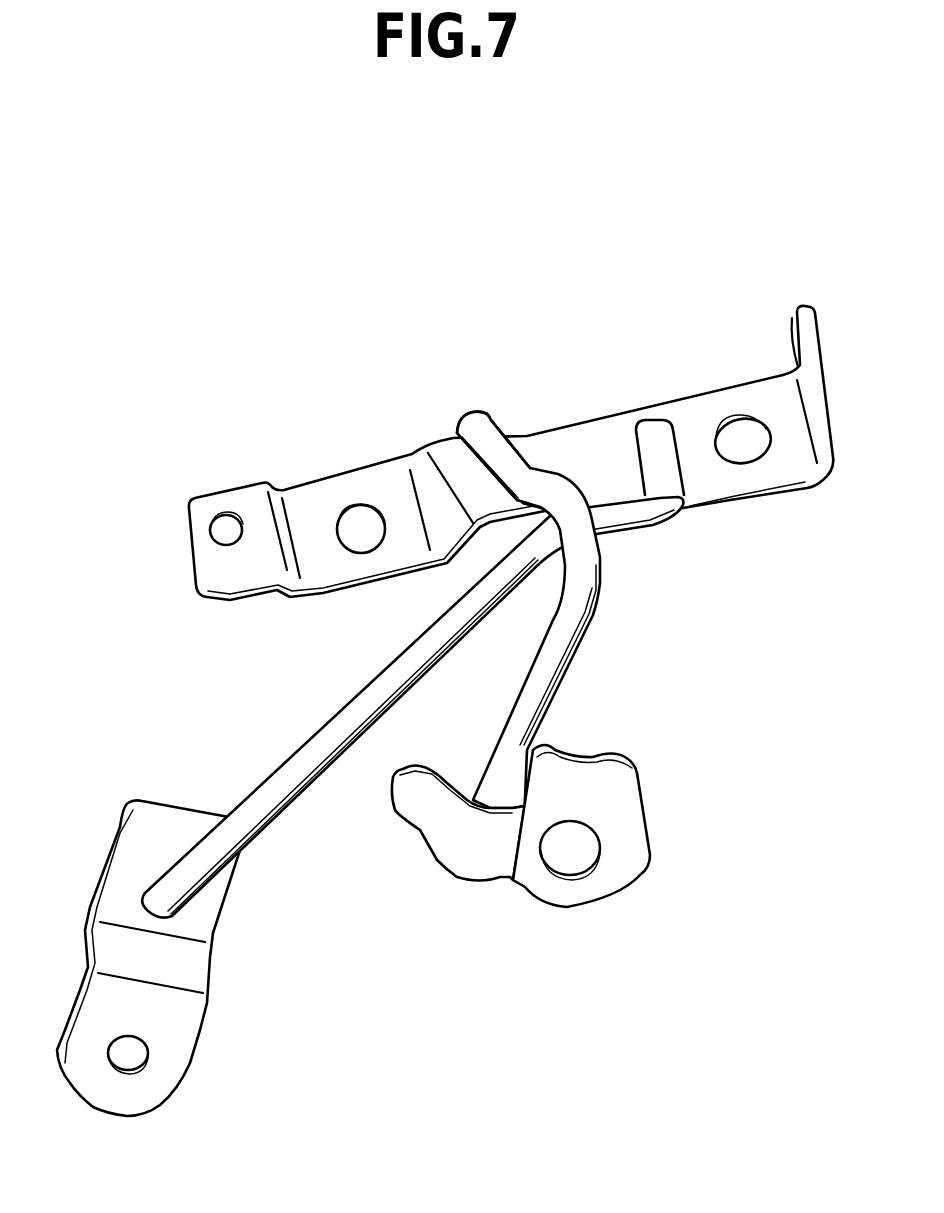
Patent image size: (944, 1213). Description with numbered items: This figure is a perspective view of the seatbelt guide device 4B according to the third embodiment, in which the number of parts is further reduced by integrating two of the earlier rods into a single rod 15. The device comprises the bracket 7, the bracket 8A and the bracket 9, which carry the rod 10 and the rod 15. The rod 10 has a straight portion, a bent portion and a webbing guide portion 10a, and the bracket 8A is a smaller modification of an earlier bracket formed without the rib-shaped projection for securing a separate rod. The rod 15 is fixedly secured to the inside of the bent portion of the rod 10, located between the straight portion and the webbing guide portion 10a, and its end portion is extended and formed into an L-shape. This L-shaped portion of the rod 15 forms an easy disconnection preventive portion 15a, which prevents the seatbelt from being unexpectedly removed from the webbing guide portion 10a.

The seatbelt guide device 4B is at (652, 350).
The bracket 7 is at (313, 503).
The bracket 8A is at (647, 820).
The bracket 9 is at (203, 1033).
The rod 10 is at (573, 630).
The webbing guide portion 10a is at (552, 472).
The rod 15 is at (363, 688).
The easy disconnection preventive portion 15a is at (657, 534).